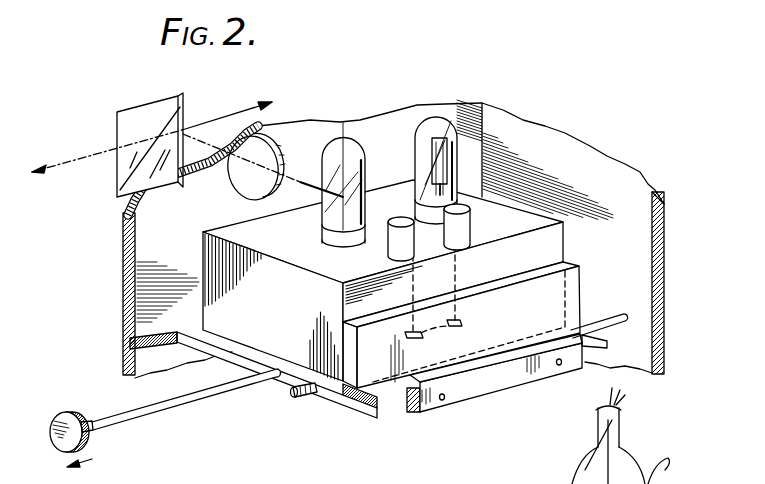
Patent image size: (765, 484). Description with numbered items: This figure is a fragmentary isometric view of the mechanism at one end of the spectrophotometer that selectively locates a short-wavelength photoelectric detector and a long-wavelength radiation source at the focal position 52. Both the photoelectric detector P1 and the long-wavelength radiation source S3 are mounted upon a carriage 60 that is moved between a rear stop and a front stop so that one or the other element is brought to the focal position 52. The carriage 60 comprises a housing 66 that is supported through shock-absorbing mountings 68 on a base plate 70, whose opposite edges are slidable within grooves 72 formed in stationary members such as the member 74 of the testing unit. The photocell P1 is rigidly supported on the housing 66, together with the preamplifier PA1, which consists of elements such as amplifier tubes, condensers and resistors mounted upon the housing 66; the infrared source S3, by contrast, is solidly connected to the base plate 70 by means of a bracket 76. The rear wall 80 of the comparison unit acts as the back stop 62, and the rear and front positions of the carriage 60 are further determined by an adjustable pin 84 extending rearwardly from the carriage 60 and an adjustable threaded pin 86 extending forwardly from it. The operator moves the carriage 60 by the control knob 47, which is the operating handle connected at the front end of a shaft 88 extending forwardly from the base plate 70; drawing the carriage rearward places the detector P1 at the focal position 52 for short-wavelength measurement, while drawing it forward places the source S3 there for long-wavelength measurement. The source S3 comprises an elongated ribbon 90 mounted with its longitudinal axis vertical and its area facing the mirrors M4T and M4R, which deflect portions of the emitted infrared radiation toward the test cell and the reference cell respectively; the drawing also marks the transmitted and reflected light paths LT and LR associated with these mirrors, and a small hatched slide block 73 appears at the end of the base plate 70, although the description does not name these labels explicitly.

The control knob 47 is at (63, 445).
The shaft 88 is at (166, 407).
The carriage 60 is at (274, 340).
The stationary member 74 is at (130, 331).
The grooves 72 is at (165, 338).
The base plate 70 is at (373, 412).
The adjustable threaded pin 86 is at (298, 398).
The shock-absorbing mountings 68 is at (343, 386).
The housing 66 is at (553, 238).
The slider block 73 is at (407, 405).
The bracket 76 is at (458, 398).
The adjustable pin 84 is at (610, 322).
The rear wall 80 is at (642, 263).
The back stop 62 is at (662, 367).
The focal position 52 is at (345, 189).
The elongated ribbon 90 is at (432, 150).
The long-wavelength radiation source S3 is at (454, 152).
The photoelectric detector P1 is at (316, 213).
The preamplifier PA1 is at (469, 298).
The mirror M4T is at (128, 130).
The mirror M4R is at (203, 106).
The transmitted light beam LT is at (62, 164).
The reflected light beam LR is at (233, 118).